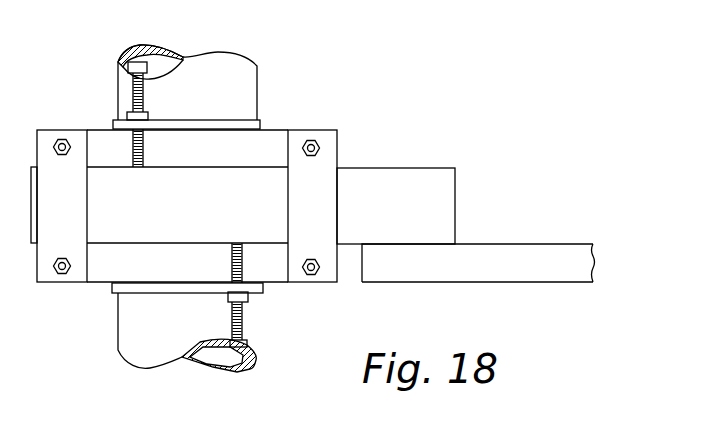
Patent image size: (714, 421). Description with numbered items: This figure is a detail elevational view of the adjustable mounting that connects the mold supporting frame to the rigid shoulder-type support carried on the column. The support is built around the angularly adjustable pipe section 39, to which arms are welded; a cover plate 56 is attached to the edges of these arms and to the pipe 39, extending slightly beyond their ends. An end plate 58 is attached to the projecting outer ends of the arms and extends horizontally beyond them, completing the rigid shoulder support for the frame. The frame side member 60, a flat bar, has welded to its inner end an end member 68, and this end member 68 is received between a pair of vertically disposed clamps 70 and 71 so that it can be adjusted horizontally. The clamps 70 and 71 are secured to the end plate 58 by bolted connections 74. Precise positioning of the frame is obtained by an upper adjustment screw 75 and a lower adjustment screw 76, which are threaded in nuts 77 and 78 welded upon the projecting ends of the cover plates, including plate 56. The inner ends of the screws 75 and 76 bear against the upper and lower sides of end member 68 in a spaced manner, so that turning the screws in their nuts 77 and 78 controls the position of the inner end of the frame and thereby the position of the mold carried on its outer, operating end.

The pipe 39 is at (252, 82).
The cover plate 56 is at (262, 127).
The end plate 58 is at (100, 275).
The side member 60 is at (568, 248).
The end member 68 is at (413, 173).
The vertical clamp 70 is at (78, 135).
The vertical clamp 71 is at (328, 275).
The bolted connection 74 is at (302, 147).
The upper adjustment screw 75 is at (152, 82).
The lower adjustment screw 76 is at (233, 320).
The nut 77 is at (150, 110).
The nut 78 is at (247, 297).